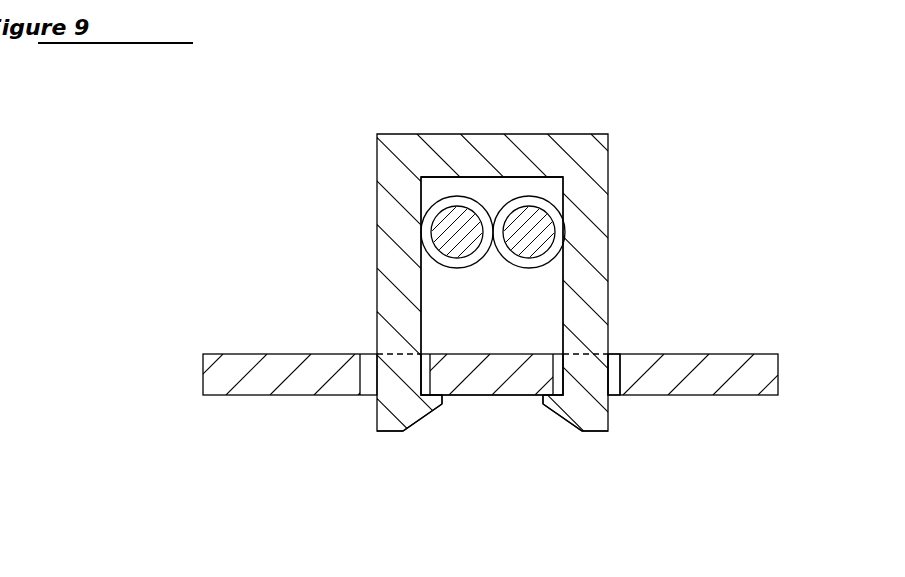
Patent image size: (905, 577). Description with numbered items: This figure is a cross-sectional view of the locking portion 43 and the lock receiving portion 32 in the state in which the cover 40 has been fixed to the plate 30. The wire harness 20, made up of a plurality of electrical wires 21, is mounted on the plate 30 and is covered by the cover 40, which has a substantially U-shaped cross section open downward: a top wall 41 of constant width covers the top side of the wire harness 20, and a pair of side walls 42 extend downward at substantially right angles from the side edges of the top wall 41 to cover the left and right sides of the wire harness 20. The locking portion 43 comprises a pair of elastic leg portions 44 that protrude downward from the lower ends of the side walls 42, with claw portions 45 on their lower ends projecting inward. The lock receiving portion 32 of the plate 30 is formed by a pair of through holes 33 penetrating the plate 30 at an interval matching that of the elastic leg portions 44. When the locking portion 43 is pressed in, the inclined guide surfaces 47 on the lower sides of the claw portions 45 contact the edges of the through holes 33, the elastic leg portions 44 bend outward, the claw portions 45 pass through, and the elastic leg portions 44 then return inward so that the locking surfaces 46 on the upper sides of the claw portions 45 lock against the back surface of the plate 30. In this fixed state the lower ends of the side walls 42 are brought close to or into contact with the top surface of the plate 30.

The wire harness 20 is at (513, 185).
The electrical wires 21 is at (462, 223).
The plate 30 is at (748, 383).
The lock receiving portion 32 is at (622, 333).
The through holes 33 is at (360, 381).
The cover 40 is at (412, 143).
The top wall 41 is at (481, 145).
The side walls 42 is at (384, 247).
The locking portion 43 is at (588, 458).
The elastic leg portions 44 is at (580, 369).
The claw portions 45 is at (443, 407).
The locking surfaces 46 is at (439, 393).
The guide surfaces 47 is at (440, 415).